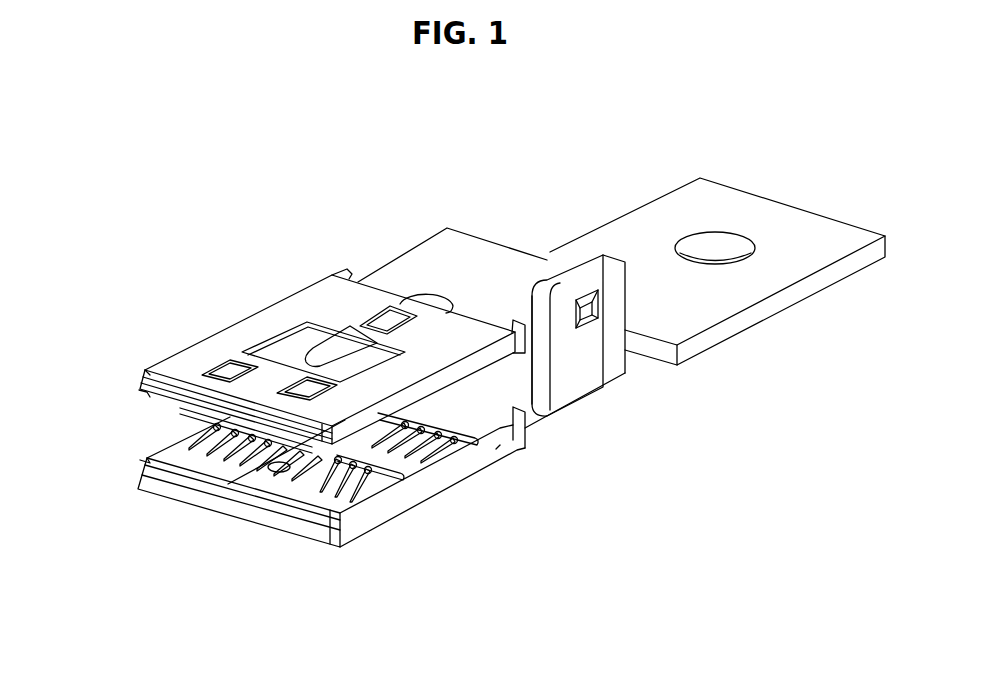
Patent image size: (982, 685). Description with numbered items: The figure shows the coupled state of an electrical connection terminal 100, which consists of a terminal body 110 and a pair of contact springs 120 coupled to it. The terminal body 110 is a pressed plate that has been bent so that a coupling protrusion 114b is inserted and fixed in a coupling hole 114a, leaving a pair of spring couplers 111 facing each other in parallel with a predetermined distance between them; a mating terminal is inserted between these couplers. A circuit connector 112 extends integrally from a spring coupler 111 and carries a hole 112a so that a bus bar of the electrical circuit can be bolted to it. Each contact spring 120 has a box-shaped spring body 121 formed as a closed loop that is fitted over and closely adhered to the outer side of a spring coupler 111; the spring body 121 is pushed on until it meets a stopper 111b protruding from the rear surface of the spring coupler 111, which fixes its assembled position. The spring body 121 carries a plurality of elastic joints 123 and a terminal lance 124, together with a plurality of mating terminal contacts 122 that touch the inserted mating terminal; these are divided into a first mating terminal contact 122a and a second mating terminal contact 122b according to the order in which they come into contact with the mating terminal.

The electrical connection terminal 100 is at (232, 138).
The terminal body 110 is at (447, 228).
The spring coupler 111 is at (146, 392).
The stopper 111b is at (442, 296).
The circuit connector 112 is at (643, 203).
The hole 112a is at (722, 246).
The coupling hole 114a is at (584, 312).
The coupling protrusion 114b is at (588, 312).
The contact spring 120 is at (268, 300).
The spring body 121 is at (166, 362).
The mating terminal contact 122 is at (371, 501).
The first mating terminal contact 122a is at (202, 448).
The second mating terminal contact 122b is at (455, 442).
The elastic joint 123 is at (387, 316).
The terminal lance 124 is at (303, 340).